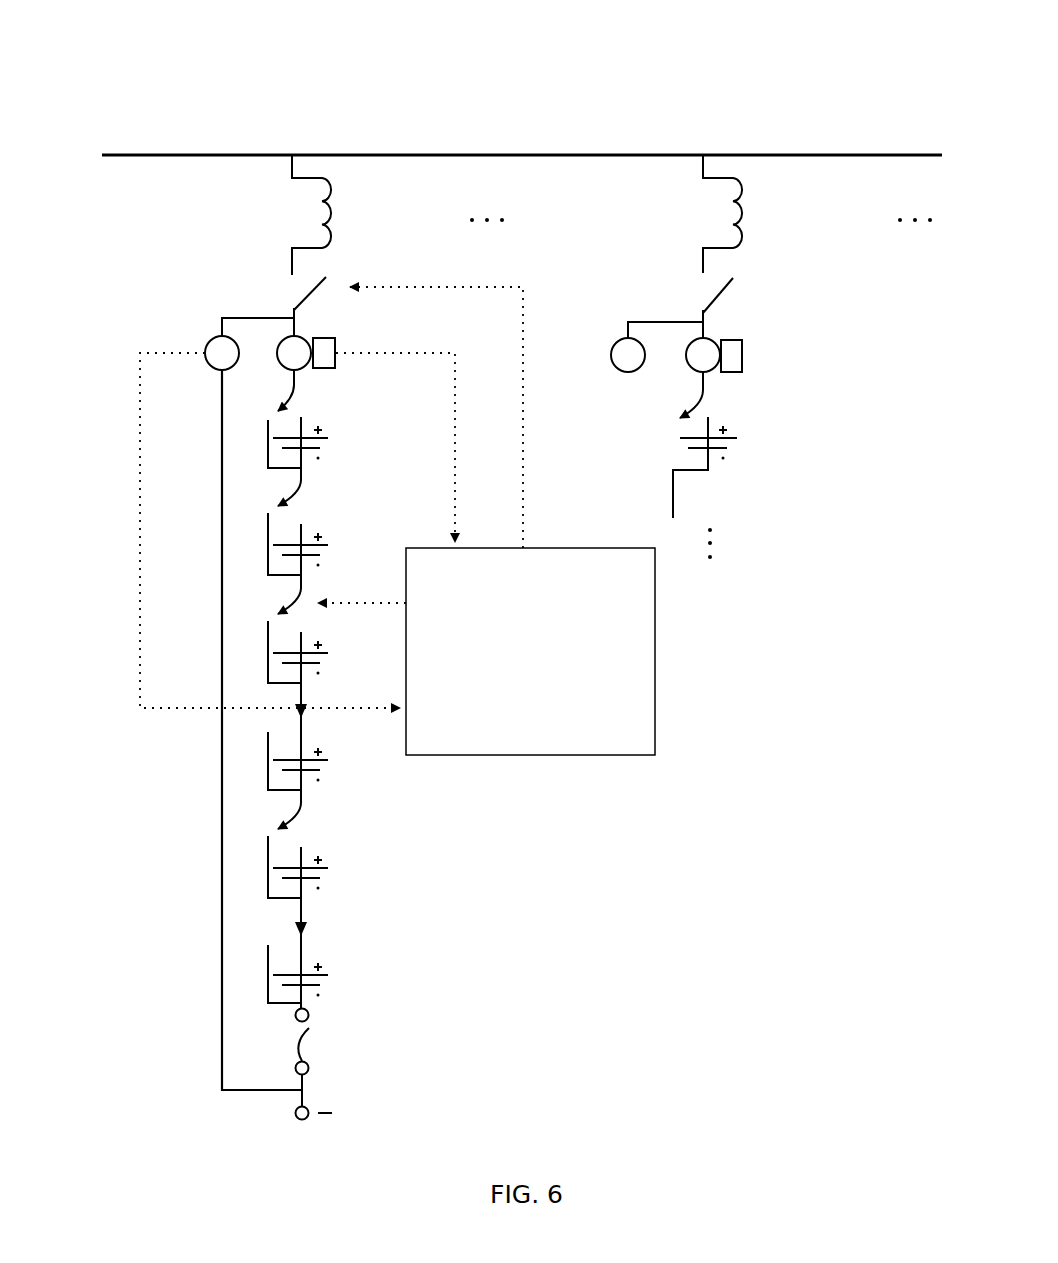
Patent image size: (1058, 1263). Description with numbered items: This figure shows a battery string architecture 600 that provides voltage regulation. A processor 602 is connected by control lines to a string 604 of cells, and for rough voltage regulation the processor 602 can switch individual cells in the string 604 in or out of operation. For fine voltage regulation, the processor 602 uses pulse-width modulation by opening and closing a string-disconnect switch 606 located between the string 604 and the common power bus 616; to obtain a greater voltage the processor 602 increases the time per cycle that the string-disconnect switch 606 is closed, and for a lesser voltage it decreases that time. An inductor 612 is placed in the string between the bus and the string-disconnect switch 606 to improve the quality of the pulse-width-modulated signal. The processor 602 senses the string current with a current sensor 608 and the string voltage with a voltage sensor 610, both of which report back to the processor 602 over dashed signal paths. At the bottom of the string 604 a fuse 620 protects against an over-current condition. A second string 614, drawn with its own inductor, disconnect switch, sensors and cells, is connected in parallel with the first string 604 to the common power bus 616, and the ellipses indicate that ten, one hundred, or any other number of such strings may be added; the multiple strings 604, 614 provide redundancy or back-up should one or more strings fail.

The battery string architecture 600 is at (207, 105).
The processor 602 is at (508, 654).
The string 604 is at (375, 844).
The string-disconnect switch 606 is at (300, 307).
The current sensor 608 is at (328, 338).
The voltage sensor 610 is at (218, 352).
The inductor 612 is at (320, 205).
The string 614 is at (768, 326).
The common power bus 616 is at (533, 153).
The fuse 620 is at (311, 1037).